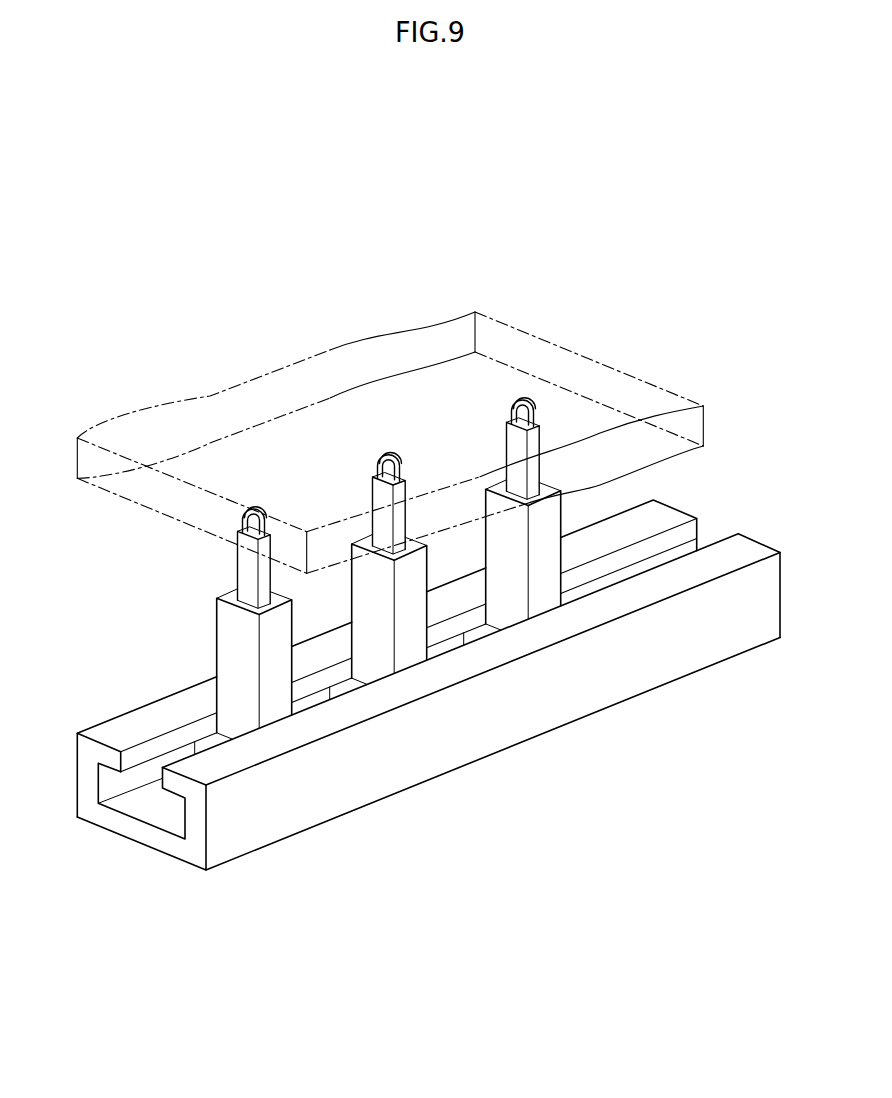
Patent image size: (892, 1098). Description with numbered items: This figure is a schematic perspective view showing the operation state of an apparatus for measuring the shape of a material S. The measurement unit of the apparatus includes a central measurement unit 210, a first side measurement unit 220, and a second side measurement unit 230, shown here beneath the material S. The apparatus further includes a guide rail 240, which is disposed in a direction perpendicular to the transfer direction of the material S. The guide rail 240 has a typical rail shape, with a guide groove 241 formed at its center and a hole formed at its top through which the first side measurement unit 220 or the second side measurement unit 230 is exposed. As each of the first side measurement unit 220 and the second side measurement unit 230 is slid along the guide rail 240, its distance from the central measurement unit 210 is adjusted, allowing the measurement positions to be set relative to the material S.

The material S is at (337, 363).
The central measurement unit 210 is at (430, 610).
The first side measurement unit 220 is at (300, 670).
The second side measurement unit 230 is at (570, 565).
The guide rail 240 is at (283, 822).
The guide groove 241 is at (183, 817).